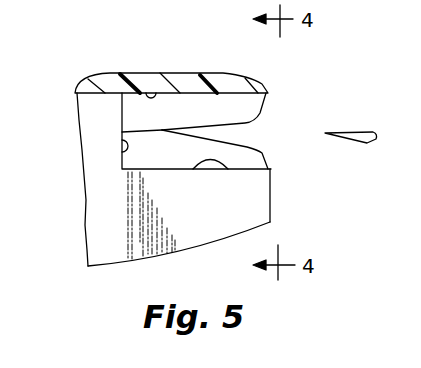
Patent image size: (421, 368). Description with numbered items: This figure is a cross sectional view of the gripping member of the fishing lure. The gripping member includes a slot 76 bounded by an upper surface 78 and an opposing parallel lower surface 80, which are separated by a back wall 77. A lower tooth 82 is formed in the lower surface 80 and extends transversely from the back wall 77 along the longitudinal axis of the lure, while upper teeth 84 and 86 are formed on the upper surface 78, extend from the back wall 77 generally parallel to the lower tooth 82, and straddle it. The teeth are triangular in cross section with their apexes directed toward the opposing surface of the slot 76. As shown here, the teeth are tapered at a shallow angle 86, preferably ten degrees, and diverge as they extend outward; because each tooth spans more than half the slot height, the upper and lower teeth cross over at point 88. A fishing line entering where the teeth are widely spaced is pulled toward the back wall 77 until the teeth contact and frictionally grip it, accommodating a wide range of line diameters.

The slot 76 is at (265, 122).
The back wall 77 is at (120, 156).
The upper surface 78 is at (154, 92).
The lower surface 80 is at (214, 161).
The lower tooth 82 is at (240, 157).
The upper tooth 84 is at (232, 112).
The upper tooth 86 is at (377, 113).
The crossover point 88 is at (162, 130).